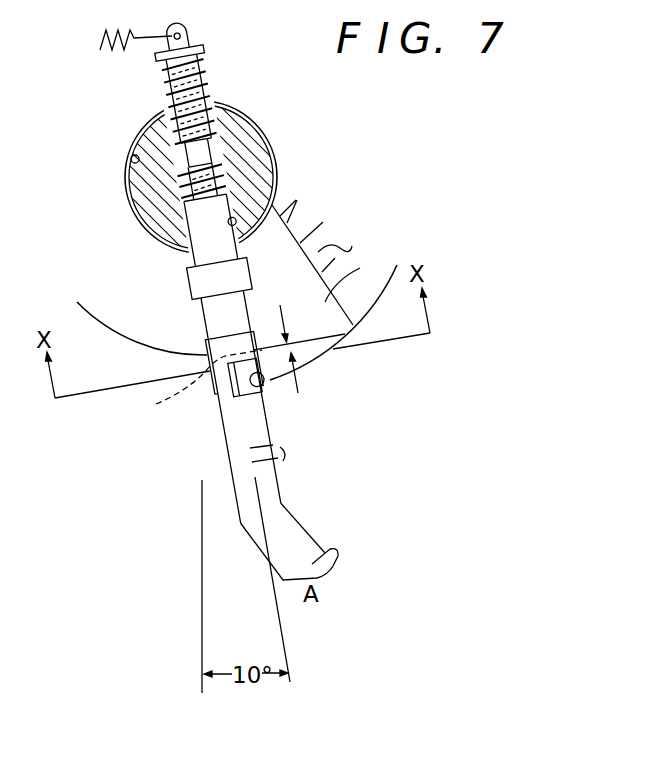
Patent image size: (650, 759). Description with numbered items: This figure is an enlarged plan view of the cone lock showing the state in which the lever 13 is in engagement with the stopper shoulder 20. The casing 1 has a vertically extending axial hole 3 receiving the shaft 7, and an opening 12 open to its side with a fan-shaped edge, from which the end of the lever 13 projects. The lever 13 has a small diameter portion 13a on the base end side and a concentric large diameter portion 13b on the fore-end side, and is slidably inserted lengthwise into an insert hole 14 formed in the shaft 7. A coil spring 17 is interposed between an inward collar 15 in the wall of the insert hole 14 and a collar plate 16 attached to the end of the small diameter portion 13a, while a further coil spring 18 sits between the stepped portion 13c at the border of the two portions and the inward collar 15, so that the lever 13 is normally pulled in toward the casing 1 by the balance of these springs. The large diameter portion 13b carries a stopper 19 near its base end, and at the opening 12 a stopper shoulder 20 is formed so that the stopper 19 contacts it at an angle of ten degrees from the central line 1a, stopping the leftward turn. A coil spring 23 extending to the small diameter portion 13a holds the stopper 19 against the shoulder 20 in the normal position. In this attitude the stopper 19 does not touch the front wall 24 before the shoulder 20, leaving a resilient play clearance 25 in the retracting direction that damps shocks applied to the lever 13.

The casing 1 is at (320, 250).
The central line 1a is at (202, 596).
The axial hole 3 is at (131, 158).
The shaft 7 is at (132, 201).
The opening 12 is at (322, 270).
The lever 13 is at (216, 432).
The small diameter portion 13a is at (216, 143).
The large diameter portion 13b is at (260, 434).
The stepped portion 13c is at (188, 258).
The insert hole 14 is at (240, 203).
The inward collar 15 is at (198, 153).
The collar plate 16 is at (203, 50).
The coil spring 17 is at (218, 95).
The coil spring 18 is at (222, 173).
The stopper 19 is at (230, 377).
The stopper shoulder 20 is at (258, 393).
The coil spring 23 is at (100, 50).
The front wall 24 is at (242, 377).
The play clearance 25 is at (292, 352).